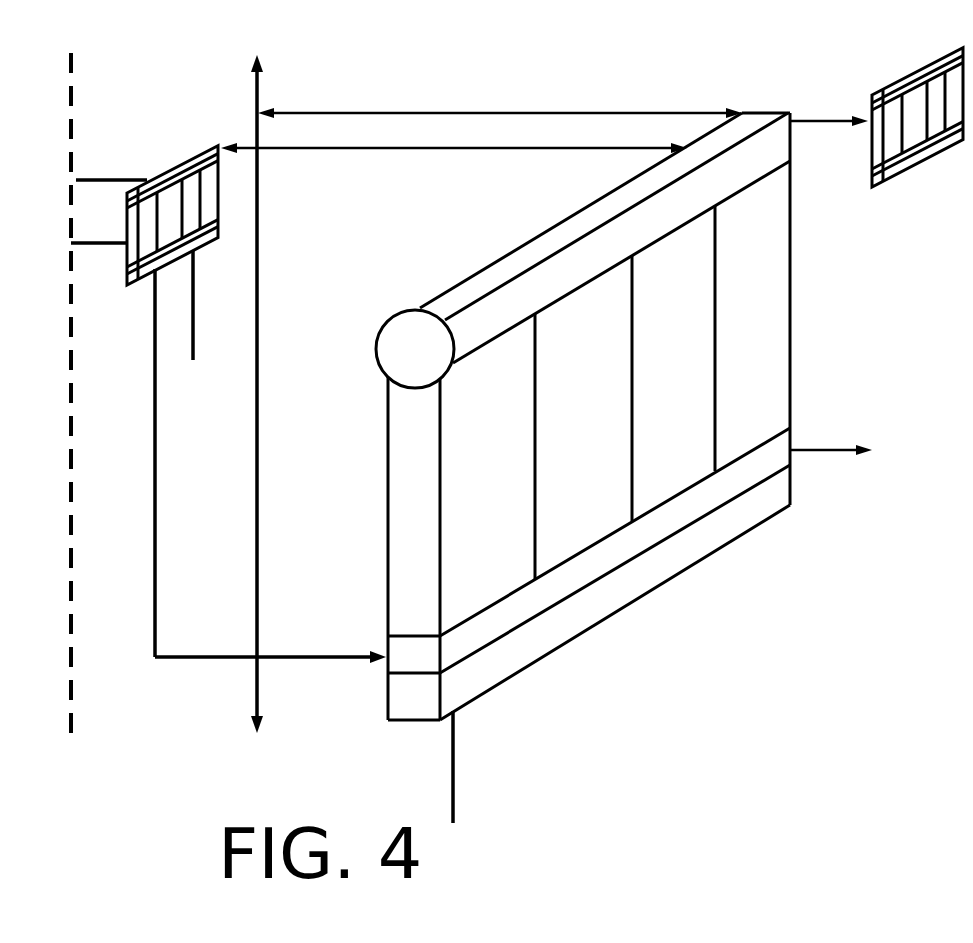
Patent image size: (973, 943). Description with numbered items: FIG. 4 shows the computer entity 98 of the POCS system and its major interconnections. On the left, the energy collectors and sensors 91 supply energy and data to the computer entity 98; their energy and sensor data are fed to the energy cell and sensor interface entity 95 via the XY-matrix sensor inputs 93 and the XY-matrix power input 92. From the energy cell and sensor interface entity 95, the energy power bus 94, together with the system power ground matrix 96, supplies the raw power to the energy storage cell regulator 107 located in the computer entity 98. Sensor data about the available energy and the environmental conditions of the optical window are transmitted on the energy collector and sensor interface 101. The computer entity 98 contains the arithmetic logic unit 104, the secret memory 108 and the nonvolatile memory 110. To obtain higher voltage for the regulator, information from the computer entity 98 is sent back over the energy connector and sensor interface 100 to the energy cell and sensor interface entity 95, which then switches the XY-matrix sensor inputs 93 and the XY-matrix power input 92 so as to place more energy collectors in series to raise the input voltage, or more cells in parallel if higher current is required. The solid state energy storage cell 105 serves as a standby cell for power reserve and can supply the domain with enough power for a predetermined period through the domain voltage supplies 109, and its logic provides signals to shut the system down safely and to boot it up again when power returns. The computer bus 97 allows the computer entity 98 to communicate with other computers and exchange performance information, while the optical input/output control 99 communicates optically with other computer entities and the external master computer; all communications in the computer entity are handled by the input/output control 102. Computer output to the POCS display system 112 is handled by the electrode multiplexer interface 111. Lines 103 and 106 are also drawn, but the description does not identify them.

The energy collectors and sensors 91 is at (62, 642).
The XY-matrix power input 92 is at (95, 245).
The XY-matrix sensor inputs 93 is at (135, 178).
The energy power bus 94 is at (155, 617).
The energy cell and sensor interface entity 95 is at (202, 147).
The system power ground matrix 96 is at (193, 305).
The computer bus 97 is at (258, 470).
The computer entity 98 is at (388, 453).
The optical input/output control 99 is at (378, 336).
The energy connector and sensor interface 100 is at (362, 150).
The energy collector and sensor interface 101 is at (425, 113).
The input/output control 102 is at (542, 242).
The post support line 103 is at (455, 758).
The arithmetic logic unit 104 is at (467, 543).
The solid state energy storage cell 105 is at (550, 626).
The second panel section 106 is at (567, 480).
The energy storage cell regulator 107 is at (648, 528).
The secret memory 108 is at (678, 418).
The domain voltage supplies 109 is at (818, 452).
The nonvolatile memory 110 is at (752, 233).
The electrode multiplexer interface 111 is at (817, 108).
The POCS display system 112 is at (947, 53).